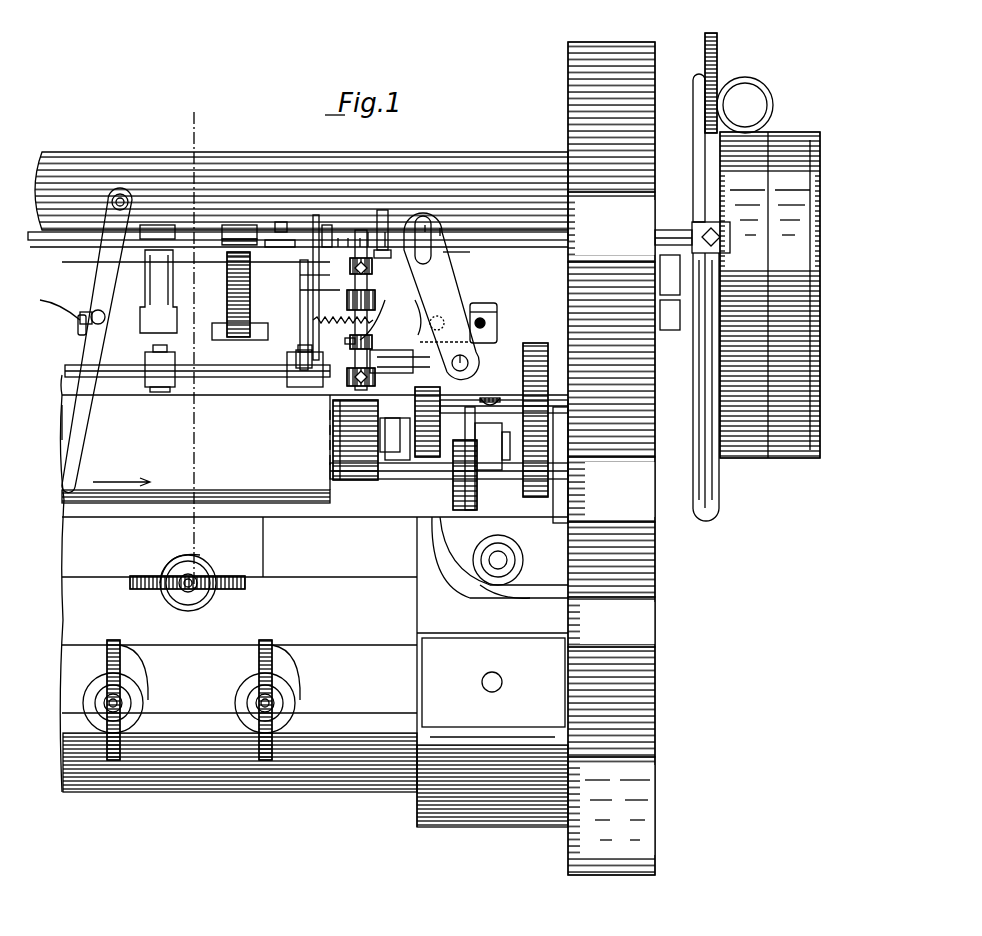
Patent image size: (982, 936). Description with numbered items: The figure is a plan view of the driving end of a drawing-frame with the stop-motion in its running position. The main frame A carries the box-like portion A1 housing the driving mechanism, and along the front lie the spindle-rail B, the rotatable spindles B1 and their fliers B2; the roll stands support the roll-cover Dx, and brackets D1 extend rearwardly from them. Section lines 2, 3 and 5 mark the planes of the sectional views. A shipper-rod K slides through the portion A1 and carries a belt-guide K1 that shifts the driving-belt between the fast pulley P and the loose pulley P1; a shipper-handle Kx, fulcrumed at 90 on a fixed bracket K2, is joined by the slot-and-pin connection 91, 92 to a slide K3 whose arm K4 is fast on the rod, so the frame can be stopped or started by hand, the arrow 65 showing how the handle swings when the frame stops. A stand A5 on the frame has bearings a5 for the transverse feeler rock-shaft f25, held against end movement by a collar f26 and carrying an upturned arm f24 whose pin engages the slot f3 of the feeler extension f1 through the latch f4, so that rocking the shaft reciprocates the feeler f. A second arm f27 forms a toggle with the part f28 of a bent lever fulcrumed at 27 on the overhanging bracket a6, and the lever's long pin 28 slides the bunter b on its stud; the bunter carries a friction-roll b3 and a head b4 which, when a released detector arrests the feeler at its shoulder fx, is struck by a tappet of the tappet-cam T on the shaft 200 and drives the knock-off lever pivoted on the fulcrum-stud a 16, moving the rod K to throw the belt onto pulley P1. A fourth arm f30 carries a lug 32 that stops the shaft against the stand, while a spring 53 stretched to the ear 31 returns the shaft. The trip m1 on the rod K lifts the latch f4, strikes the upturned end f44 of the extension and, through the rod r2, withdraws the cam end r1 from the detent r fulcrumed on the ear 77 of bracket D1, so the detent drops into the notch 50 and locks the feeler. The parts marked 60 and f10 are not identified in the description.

The box-like portion A1 is at (640, 585).
The spindle-rail B is at (346, 642).
The rotatable spindles B1 is at (180, 592).
The fliers B2 is at (105, 635).
The shipper-rod K is at (32, 238).
The fulcrum-stud a is at (322, 538).
The fulcrum-stud 16 is at (445, 329).
The stand A5 is at (497, 332).
The overhanging bracket a6 is at (380, 375).
The shipper Kx is at (100, 262).
The fulcrum 90 is at (125, 196).
The slot-and-pin connection 91 is at (98, 310).
The slot-and-pin connection 92 is at (78, 323).
The fixed bracket K2 is at (420, 346).
The main frame A is at (62, 375).
The roll-cover Dx is at (62, 420).
The section line 3 is at (193, 342).
The cap 60 is at (237, 224).
The spring 53 is at (227, 305).
The transverse notch 50 is at (300, 250).
The feeler f is at (210, 265).
The section line 5 is at (300, 275).
The upturned ear 77 is at (310, 290).
The brackets D1 is at (312, 305).
The lug 32 is at (346, 318).
The feeler rock-shaft f25 is at (360, 272).
The feeler-shoulder fx is at (372, 276).
The bearings a5 is at (380, 302).
The belt-guide K1 is at (380, 318).
The fulcrum 27 is at (416, 311).
The fourth upturned arm f30 is at (354, 341).
The ear 31 is at (300, 345).
The slide K3 is at (160, 368).
The cam-like end r1 is at (282, 222).
The feeler extension f1 is at (275, 232).
The detent r is at (330, 236).
The finger f10 is at (338, 238).
The latch f4 is at (348, 240).
The horizontal rod r2 is at (360, 238).
The slot f3 is at (368, 238).
The trip m1 is at (385, 232).
The arm K4 is at (425, 228).
The upturned end f44 is at (440, 232).
The upturned arm f24 is at (445, 250).
The tappet-cam T is at (412, 455).
The bunter b is at (340, 458).
The cam shaft 200 is at (395, 470).
The section line 2 is at (430, 460).
The friction-roll b3 is at (548, 392).
The bunter enlargement b4 is at (520, 374).
The second upturned arm f27 is at (330, 405).
The bent lever part f28 is at (330, 418).
The collar f26 is at (330, 430).
The long lateral pin 28 is at (338, 448).
The arrow 65 is at (118, 486).
The fast pulley P is at (735, 460).
The loose pulley P1 is at (800, 460).